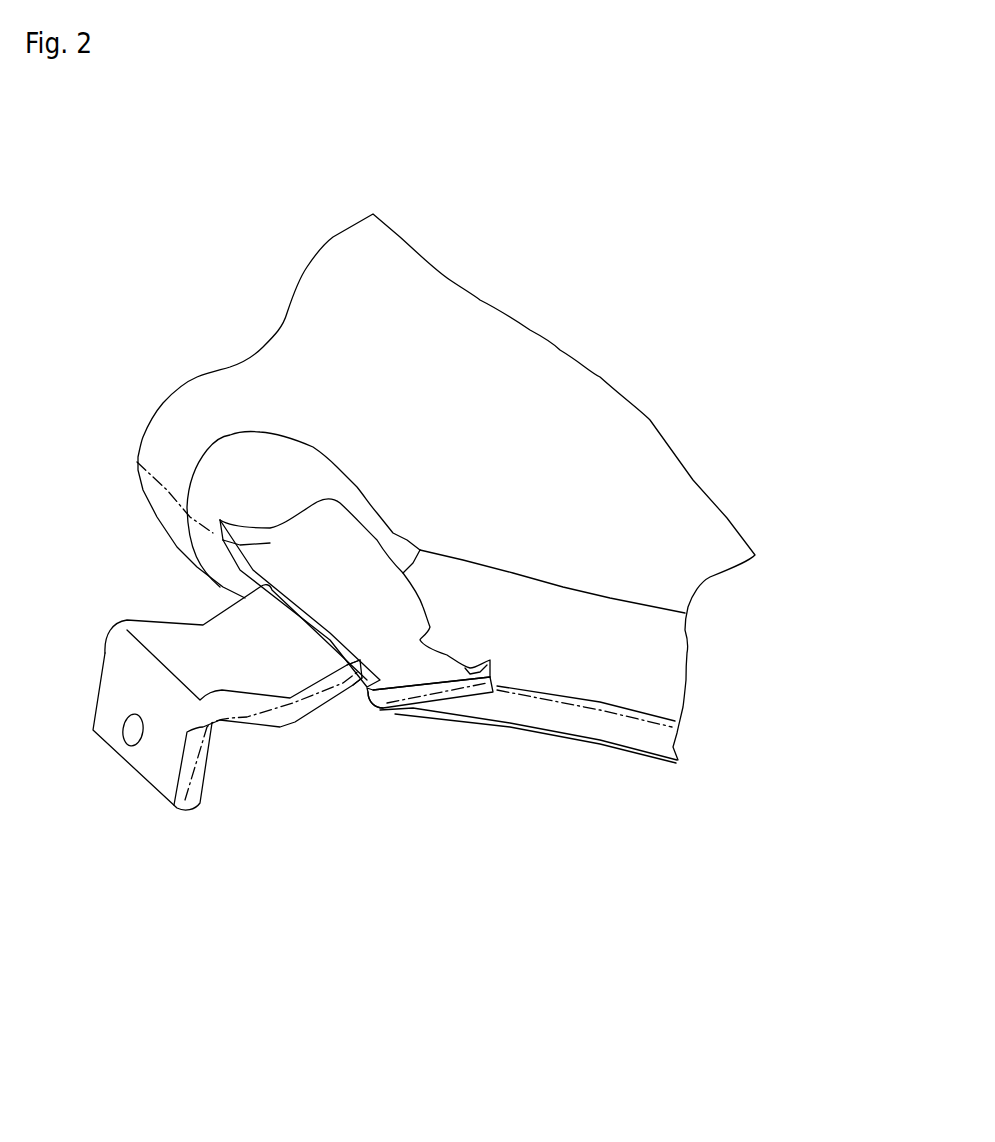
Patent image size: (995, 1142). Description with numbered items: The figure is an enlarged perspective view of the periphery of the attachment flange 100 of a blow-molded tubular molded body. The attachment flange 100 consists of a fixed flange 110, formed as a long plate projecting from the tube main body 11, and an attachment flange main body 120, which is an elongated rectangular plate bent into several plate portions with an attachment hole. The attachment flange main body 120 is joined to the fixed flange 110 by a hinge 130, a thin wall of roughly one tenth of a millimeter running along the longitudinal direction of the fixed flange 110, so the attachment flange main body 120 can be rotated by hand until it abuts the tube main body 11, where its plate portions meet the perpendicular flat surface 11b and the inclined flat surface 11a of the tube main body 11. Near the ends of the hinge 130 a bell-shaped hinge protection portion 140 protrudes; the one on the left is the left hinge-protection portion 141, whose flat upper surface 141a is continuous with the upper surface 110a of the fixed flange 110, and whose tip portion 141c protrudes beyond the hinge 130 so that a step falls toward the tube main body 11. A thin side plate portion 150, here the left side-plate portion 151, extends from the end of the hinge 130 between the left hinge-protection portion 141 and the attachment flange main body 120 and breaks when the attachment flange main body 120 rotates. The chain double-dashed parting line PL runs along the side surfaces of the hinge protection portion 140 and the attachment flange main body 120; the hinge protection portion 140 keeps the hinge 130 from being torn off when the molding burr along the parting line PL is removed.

The tube main body 11 is at (610, 453).
The inclined flat surface 11a is at (363, 510).
The perpendicular flat surface 11b is at (325, 533).
The fixed flange 110 is at (385, 663).
The upper surface of the fixed flange 110a is at (420, 550).
The hinge 130 is at (350, 632).
The attachment flange 100 is at (243, 783).
The attachment flange main body 120 is at (113, 717).
The hinge protection portion 140 is at (430, 759).
The left hinge-protection portion 141 is at (390, 685).
The upper surface of the left hinge-protection portion 141a is at (415, 685).
The tip portion of the left hinge-protection portion 141c is at (373, 700).
The side plate portion 150 is at (312, 746).
The left side-plate portion 151 is at (360, 692).
The parting line PL is at (630, 717).